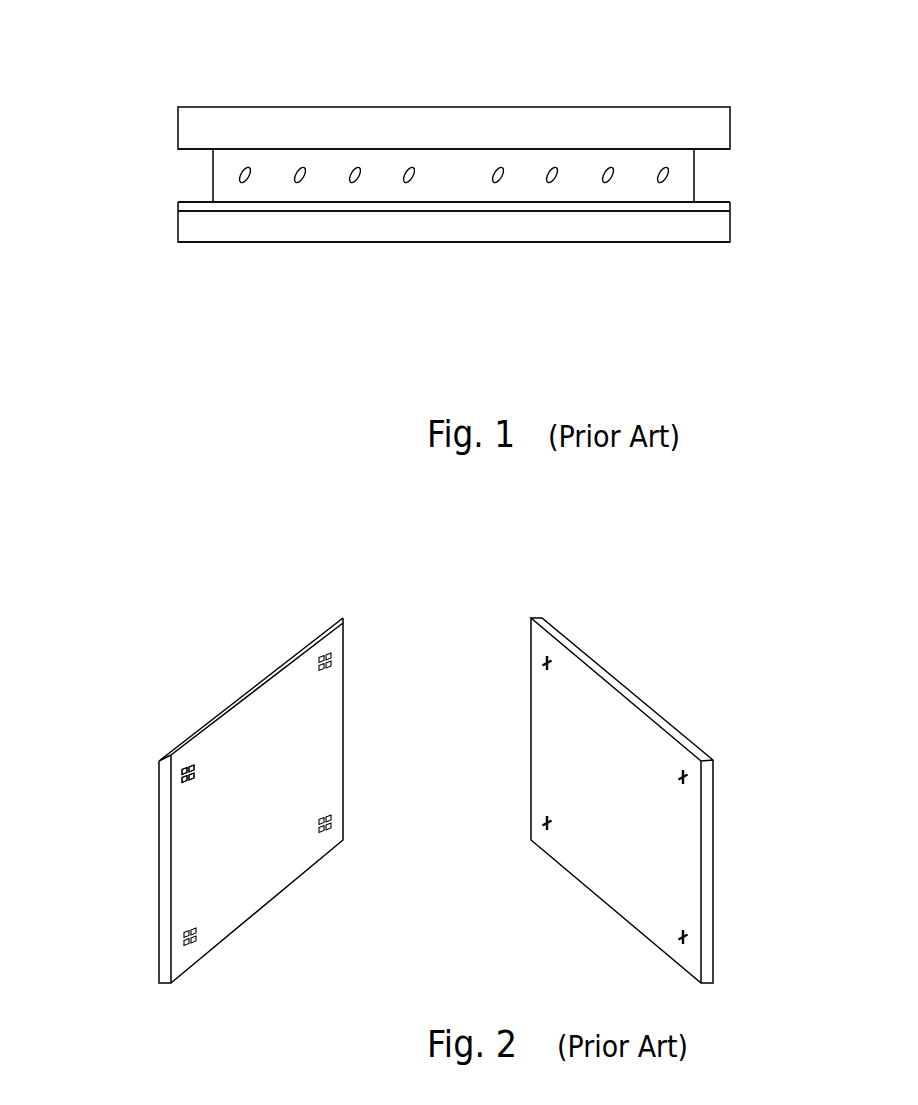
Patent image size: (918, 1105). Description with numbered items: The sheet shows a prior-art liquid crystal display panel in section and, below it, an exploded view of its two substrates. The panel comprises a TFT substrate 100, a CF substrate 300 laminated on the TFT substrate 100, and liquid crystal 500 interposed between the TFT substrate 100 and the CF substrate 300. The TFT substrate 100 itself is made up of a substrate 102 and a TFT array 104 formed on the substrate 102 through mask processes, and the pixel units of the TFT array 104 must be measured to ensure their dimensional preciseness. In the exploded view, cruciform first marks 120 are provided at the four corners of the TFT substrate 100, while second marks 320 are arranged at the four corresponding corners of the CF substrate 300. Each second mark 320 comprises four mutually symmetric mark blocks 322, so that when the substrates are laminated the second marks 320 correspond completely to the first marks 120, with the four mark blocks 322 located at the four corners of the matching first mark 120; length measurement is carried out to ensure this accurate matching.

In FIG. 1, the TFT substrate 100 is at (730, 222).
In FIG. 2, the TFT substrate 100 is at (610, 708).
In FIG. 1, the substrate 102 is at (241, 225).
In FIG. 1, the TFT array 104 is at (525, 203).
In FIG. 2, the first marks 120 is at (687, 765).
In FIG. 1, the CF substrate 300 is at (259, 123).
In FIG. 2, the CF substrate 300 is at (252, 716).
In FIG. 2, the second marks 320 is at (185, 768).
In FIG. 2, the mark blocks 322 is at (186, 782).
In FIG. 1, the liquid crystal 500 is at (554, 168).